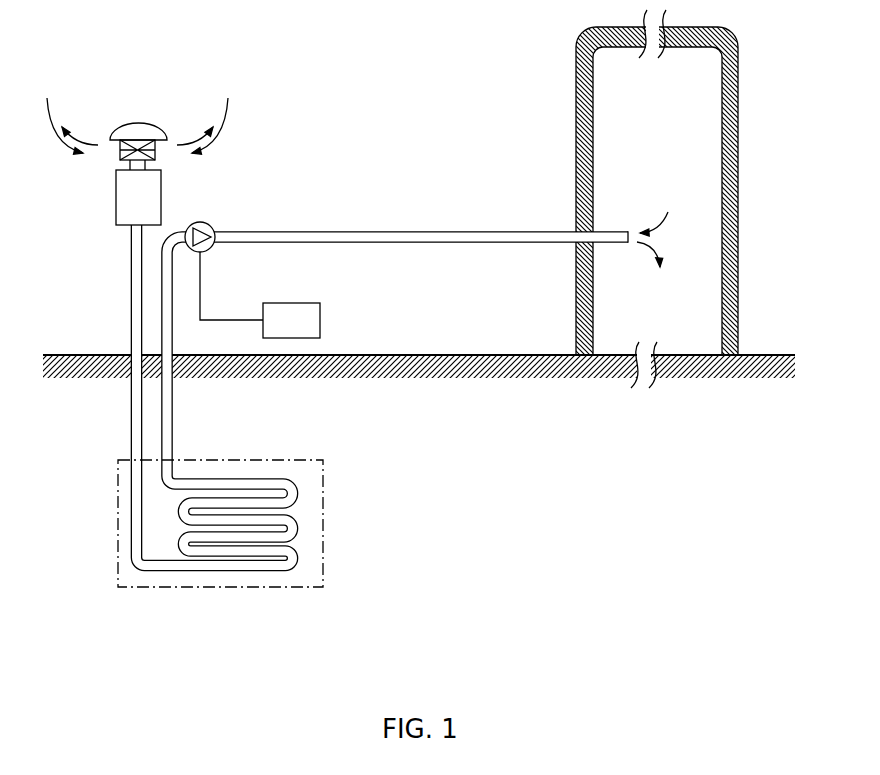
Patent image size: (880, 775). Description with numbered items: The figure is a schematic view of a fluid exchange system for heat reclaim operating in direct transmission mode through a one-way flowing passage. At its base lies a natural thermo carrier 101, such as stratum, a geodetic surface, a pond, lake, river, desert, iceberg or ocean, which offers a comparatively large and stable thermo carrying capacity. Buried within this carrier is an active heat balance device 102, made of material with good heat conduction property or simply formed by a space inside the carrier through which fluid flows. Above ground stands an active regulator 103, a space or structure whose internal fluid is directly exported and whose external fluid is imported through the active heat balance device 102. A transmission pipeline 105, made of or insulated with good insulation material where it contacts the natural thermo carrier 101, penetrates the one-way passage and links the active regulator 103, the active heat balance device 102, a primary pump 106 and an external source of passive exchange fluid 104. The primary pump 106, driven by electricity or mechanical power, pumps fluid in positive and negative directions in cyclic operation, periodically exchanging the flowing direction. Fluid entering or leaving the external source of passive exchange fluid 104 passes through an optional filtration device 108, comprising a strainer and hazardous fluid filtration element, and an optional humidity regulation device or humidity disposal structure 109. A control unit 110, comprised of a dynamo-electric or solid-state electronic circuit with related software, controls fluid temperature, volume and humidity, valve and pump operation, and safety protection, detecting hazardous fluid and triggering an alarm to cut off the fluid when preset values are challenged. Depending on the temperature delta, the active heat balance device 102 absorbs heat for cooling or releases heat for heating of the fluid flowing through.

The natural thermo carrier 101 is at (402, 380).
The active heat balance device 102 is at (218, 587).
The active regulator 103 is at (693, 148).
The external source of passive exchange fluid 104 is at (354, 169).
The transmission pipeline 105 is at (131, 300).
The primary pump 106 is at (210, 222).
The filtration device 108 is at (146, 124).
The humidity regulation device or humidity disposal structure 109 is at (116, 208).
The control unit 110 is at (320, 317).